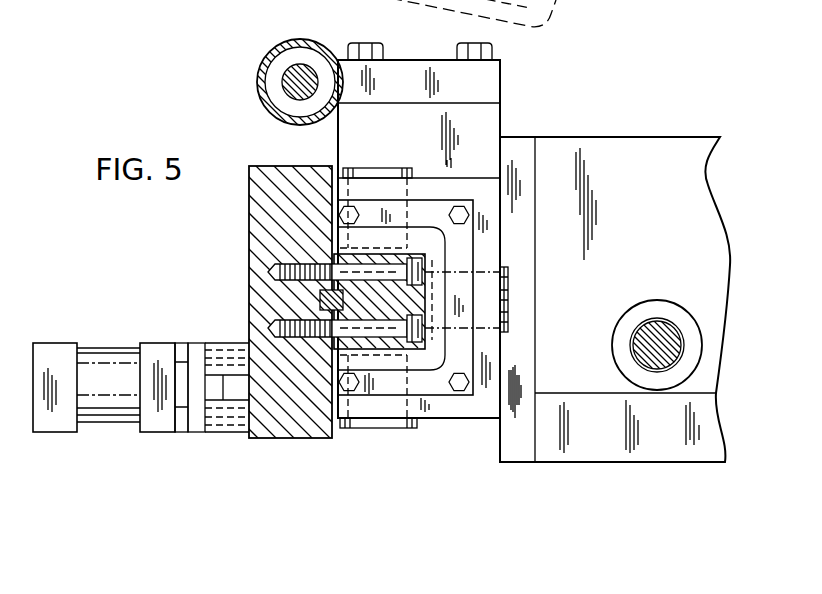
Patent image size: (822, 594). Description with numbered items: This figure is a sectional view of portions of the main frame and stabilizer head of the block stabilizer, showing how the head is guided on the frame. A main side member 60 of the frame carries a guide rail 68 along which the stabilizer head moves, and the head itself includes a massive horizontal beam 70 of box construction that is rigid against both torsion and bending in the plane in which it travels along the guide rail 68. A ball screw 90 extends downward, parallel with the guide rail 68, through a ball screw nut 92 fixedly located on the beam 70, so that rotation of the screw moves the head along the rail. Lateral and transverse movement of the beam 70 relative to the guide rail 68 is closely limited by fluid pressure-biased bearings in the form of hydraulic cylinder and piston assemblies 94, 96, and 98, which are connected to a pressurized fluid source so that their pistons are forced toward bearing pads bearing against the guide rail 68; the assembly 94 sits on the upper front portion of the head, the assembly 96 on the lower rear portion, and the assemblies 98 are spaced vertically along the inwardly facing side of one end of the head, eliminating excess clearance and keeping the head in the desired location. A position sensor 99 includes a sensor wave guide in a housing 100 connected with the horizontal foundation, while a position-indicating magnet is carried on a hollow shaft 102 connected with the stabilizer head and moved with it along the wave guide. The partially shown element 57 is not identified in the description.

The cover 57 is at (572, 10).
The main side member 60 is at (257, 241).
The guide rail 68 is at (420, 293).
The horizontal beam 70 is at (650, 142).
The ball screw 90 is at (676, 331).
The ball screw nut 92 is at (662, 305).
The cylinder and piston assembly 94 is at (400, 168).
The cylinder and piston assembly 96 is at (376, 429).
The piston and cylinder assembly 98 is at (505, 293).
The position sensor 99 is at (258, 88).
The housing 100 is at (277, 45).
The hollow shaft 102 is at (287, 74).